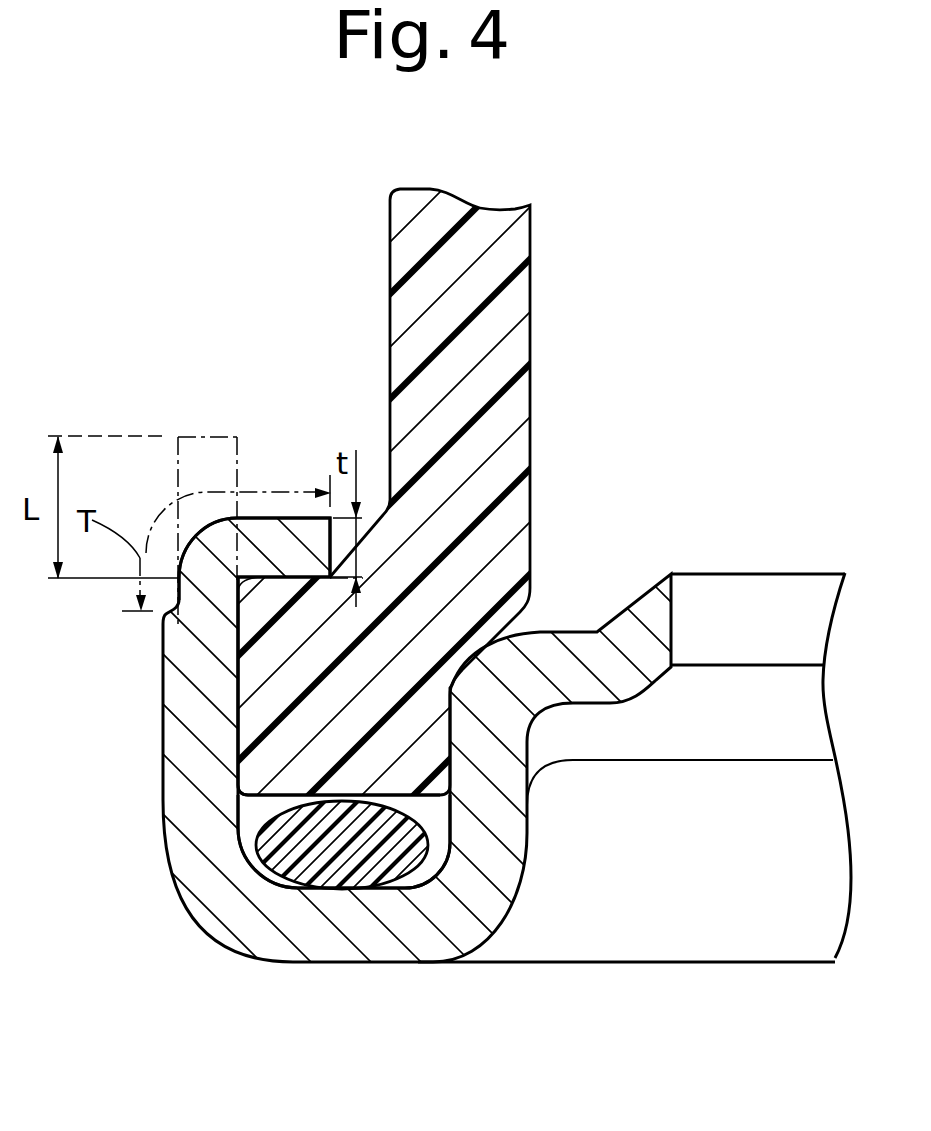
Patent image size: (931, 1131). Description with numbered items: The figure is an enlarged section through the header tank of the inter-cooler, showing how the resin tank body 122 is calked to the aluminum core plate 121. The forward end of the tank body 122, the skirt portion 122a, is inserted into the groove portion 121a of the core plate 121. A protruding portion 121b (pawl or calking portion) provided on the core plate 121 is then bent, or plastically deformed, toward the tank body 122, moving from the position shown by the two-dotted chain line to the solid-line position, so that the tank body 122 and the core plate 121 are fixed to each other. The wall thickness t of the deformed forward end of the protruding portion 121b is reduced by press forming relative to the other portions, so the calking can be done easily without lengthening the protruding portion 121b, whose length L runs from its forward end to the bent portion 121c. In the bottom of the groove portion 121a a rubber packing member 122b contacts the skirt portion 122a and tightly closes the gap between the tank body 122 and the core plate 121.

The core plate 121 is at (540, 862).
The groove portion 121a is at (250, 830).
The protruding portion 121b is at (272, 537).
The bent portion 121c is at (213, 538).
The tank body 122 is at (415, 243).
The skirt portion 122a is at (245, 730).
The packing member 122b is at (345, 862).